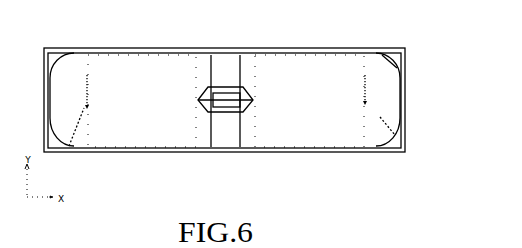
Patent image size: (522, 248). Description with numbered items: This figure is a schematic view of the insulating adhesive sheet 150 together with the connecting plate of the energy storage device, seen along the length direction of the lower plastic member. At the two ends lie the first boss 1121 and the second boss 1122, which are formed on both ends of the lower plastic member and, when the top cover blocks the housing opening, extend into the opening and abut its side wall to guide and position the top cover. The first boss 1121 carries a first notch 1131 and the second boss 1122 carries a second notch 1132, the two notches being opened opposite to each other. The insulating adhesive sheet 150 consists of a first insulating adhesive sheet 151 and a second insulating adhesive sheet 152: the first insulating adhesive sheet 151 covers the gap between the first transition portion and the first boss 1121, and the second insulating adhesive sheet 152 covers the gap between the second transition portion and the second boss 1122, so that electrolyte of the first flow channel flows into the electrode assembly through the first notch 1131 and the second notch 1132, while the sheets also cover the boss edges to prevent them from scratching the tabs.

The insulating adhesive sheet 150 is at (155, 178).
The first insulating adhesive sheet 151 is at (160, 154).
The second insulating adhesive sheet 152 is at (262, 154).
The first boss 1121 is at (76, 50).
The second boss 1122 is at (389, 46).
The first notch 1131 is at (69, 149).
The second notch 1132 is at (400, 154).